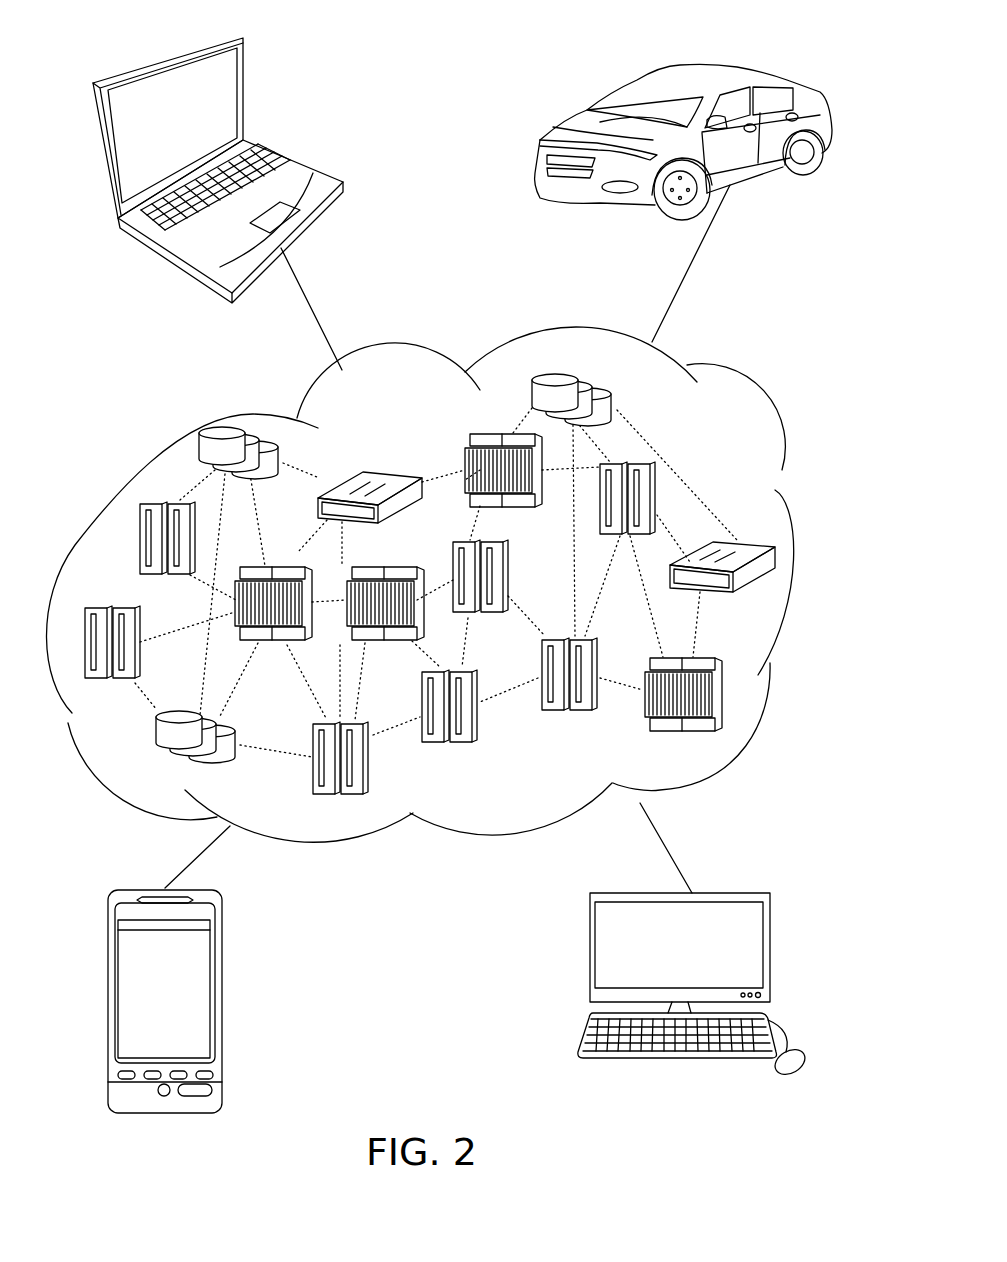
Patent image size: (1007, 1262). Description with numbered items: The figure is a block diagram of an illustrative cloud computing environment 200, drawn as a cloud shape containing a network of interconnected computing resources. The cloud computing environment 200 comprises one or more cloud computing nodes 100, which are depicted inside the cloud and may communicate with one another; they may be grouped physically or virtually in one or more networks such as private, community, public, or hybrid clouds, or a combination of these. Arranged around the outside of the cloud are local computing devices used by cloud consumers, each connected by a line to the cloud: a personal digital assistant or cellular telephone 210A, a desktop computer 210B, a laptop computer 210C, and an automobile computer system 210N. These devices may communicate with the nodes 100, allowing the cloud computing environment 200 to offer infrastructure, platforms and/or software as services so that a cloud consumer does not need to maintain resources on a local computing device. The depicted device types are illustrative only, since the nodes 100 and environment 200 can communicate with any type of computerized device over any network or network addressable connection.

The cloud computing node 100 is at (752, 526).
The cloud computing environment 200 is at (760, 388).
The personal digital assistant or cellular telephone 210A is at (218, 915).
The desktop computer 210B is at (770, 912).
The laptop computer 210C is at (298, 165).
The automobile computer system 210N is at (825, 60).